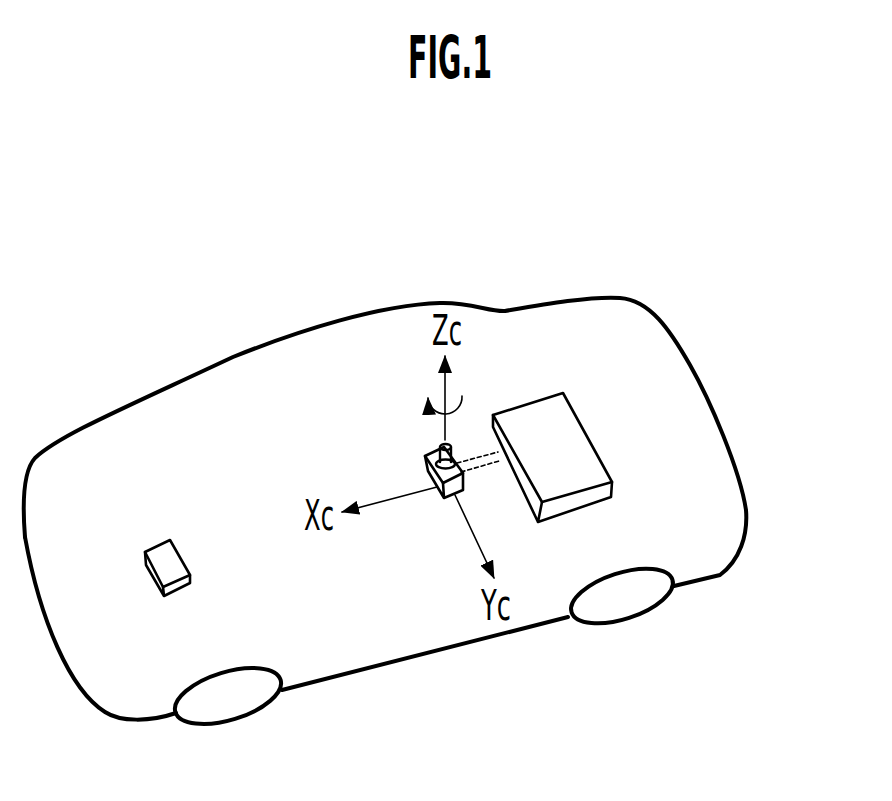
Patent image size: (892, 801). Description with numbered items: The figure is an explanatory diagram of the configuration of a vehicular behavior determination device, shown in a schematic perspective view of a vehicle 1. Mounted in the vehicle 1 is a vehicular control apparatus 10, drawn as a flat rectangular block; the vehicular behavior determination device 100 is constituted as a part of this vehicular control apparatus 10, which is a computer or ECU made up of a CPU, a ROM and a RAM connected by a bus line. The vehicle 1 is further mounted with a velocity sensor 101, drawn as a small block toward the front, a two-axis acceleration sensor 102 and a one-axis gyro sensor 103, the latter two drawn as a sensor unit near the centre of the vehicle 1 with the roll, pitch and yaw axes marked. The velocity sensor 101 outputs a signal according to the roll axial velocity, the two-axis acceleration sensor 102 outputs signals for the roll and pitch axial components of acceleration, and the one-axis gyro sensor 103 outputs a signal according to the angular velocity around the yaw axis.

The vehicle 1 is at (228, 348).
The vehicular control apparatus 10 is at (680, 444).
The vehicular behavior determination device 100 is at (580, 445).
The velocity sensor 101 is at (146, 537).
The 2-axis acceleration sensor 102 is at (434, 439).
The 1-axis gyro sensor 103 is at (436, 513).